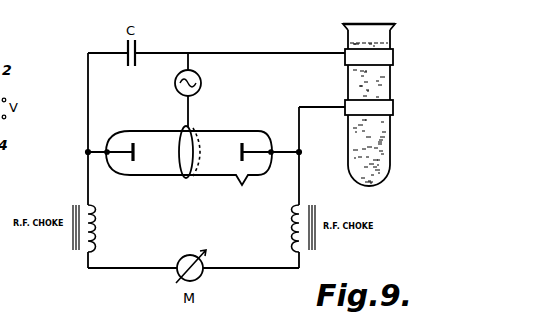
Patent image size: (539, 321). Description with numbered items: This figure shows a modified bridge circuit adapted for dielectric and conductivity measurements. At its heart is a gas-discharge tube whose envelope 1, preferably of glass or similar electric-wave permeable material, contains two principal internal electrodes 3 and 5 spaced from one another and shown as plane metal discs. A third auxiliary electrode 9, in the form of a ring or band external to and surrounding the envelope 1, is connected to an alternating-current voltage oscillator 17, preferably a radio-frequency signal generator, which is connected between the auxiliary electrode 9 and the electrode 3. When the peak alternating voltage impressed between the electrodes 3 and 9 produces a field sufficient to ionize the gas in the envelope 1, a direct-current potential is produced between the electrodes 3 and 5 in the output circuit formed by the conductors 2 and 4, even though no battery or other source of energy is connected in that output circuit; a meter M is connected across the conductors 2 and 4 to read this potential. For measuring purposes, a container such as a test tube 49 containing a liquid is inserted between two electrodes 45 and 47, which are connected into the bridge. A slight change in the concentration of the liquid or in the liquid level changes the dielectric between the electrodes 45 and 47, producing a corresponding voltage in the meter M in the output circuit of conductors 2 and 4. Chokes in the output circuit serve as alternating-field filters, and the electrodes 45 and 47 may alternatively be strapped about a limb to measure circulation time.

The envelope 1 is at (160, 175).
The conductor 2 is at (152, 268).
The electrode 3 is at (133, 143).
The conductor 4 is at (274, 268).
The electrode 5 is at (237, 140).
The auxiliary electrode 9 is at (185, 178).
The voltage oscillator 17 is at (201, 88).
The electrode 45 is at (393, 57).
The electrode 47 is at (393, 107).
The test tube 49 is at (393, 90).